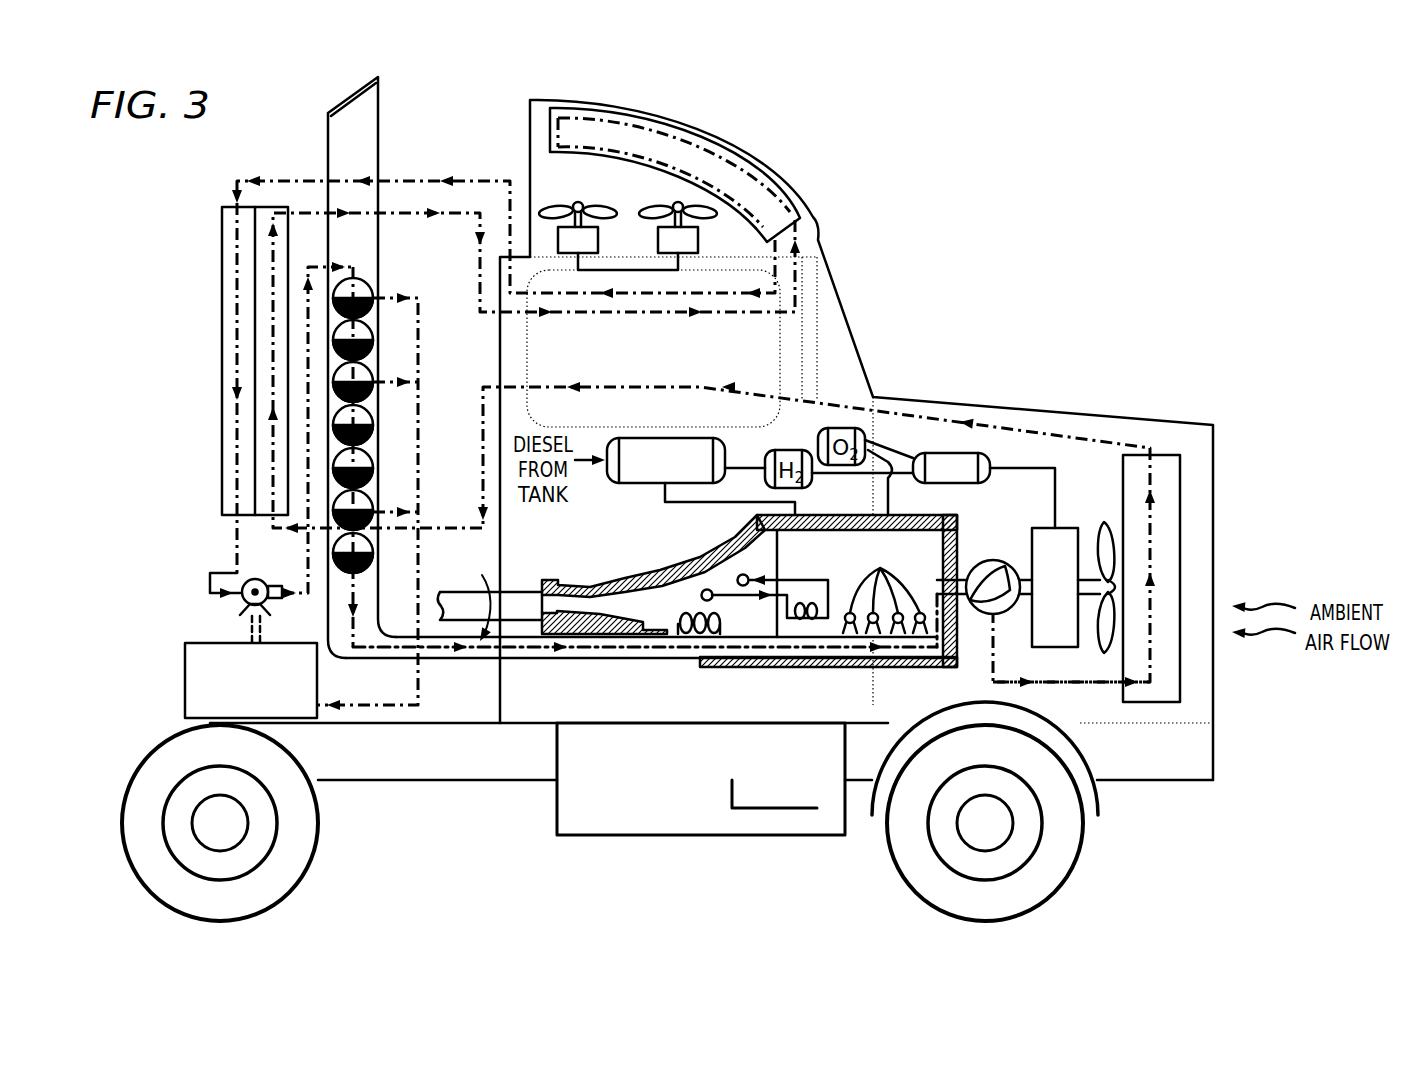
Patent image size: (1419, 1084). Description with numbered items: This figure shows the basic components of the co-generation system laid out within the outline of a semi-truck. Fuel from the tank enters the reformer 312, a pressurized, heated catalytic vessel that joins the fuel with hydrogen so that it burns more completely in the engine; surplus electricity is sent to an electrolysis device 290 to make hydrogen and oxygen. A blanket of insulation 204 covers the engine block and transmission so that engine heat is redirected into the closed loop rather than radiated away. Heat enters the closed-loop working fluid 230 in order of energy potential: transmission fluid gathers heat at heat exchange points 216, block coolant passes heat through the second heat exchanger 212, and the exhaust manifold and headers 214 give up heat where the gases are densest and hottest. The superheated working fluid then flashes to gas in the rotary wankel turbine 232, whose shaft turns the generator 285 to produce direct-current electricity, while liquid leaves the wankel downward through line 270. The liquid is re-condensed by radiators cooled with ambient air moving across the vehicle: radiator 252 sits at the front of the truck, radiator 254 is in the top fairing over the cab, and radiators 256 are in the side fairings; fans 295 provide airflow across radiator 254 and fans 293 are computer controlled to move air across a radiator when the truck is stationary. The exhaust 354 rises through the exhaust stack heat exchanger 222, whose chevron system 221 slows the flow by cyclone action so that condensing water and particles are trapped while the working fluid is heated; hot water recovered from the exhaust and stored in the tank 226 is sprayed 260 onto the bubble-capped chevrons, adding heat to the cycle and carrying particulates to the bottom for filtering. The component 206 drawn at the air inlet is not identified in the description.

The exhaust 354 is at (375, 122).
The radiators 256 is at (267, 367).
The exhaust stack heat exchanger 222 is at (368, 254).
The chevron system 221 is at (373, 337).
The spray 260 is at (262, 578).
The tank 226 is at (317, 677).
The air intake 206 is at (462, 600).
The blanket of insulation 204 is at (610, 586).
The heat exchange points 216 is at (738, 577).
The exhaust manifold and headers 214 is at (885, 587).
The second heat exchanger 212 is at (690, 634).
The working fluid of the closed loop energy cycle 230 is at (530, 650).
The reformer 312 is at (648, 440).
The electrolysis device 290 is at (975, 455).
The radiator 254 is at (741, 190).
The fans 295 is at (628, 270).
The generator 285 is at (1036, 528).
The fans 293 is at (1098, 523).
The rotary wankel turbine 232 is at (990, 570).
The radiator 252 is at (1167, 502).
The line 270 is at (1080, 690).